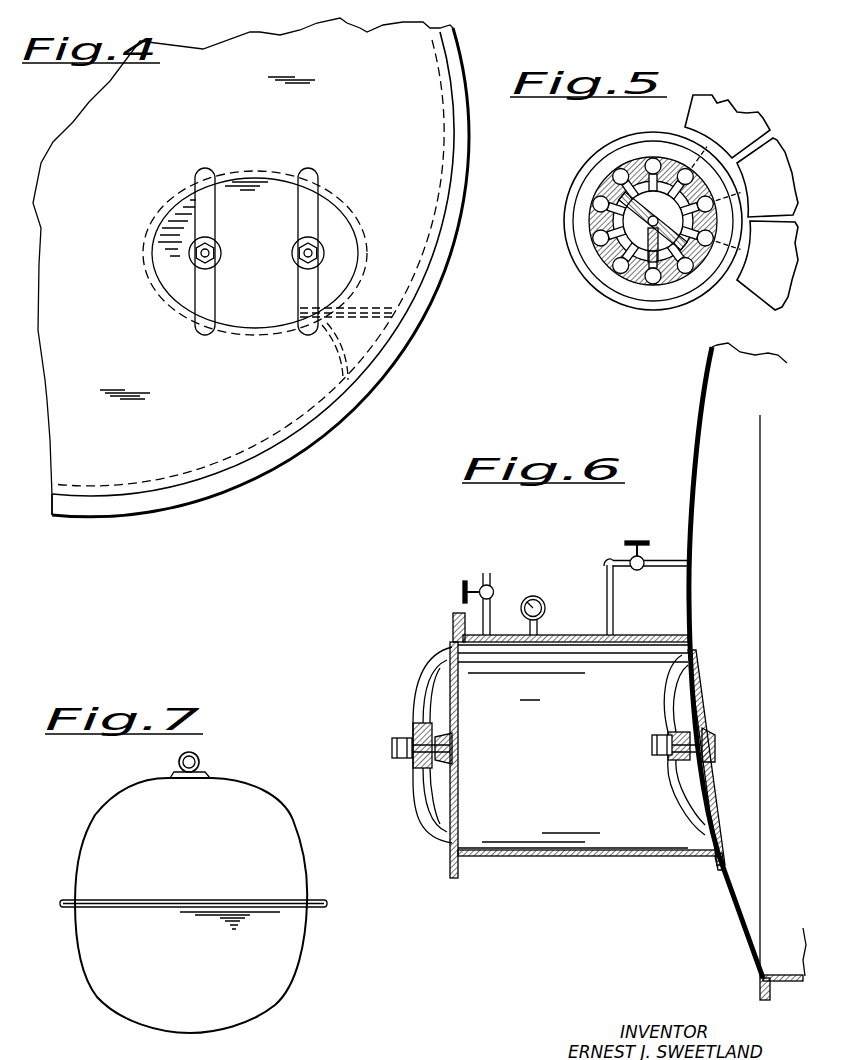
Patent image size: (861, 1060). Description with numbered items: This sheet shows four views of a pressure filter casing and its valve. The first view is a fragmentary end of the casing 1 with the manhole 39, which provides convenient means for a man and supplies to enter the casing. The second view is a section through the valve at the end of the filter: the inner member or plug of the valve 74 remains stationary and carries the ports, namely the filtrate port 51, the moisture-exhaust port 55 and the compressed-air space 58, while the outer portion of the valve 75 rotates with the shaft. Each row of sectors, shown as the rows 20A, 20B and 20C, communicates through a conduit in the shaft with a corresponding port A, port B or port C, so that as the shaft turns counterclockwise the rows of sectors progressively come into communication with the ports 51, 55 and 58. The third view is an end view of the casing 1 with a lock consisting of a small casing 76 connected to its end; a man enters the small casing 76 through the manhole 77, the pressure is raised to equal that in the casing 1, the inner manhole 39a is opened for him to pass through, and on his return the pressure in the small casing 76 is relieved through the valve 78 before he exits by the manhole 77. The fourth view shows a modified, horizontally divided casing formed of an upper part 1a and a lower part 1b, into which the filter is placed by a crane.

In FIG. 4, the manhole 39 is at (333, 222).
In FIG. 6, the manhole 39a is at (690, 692).
In FIG. 5, the valve port 51 is at (657, 240).
In FIG. 5, the valve port 55 is at (647, 197).
In FIG. 5, the valve space 58 is at (650, 222).
In FIG. 5, the inner member or plug of the valve 74 is at (660, 250).
In FIG. 5, the outer portion of the valve 75 is at (635, 212).
In FIG. 6, the small casing 76 is at (583, 636).
In FIG. 6, the manhole 77 is at (450, 703).
In FIG. 6, the valve 78 is at (493, 590).
In FIG. 6, the casing 1 is at (688, 503).
In FIG. 7, the casing upper portion 1a is at (280, 842).
In FIG. 7, the casing lower portion 1b is at (292, 955).
In FIG. 5, the row of sectors 20A is at (727, 126).
In FIG. 5, the row of sectors 20B is at (767, 177).
In FIG. 5, the row of sectors 20C is at (767, 265).
In FIG. 5, the port A is at (682, 172).
In FIG. 5, the port B is at (710, 213).
In FIG. 5, the port C is at (707, 246).